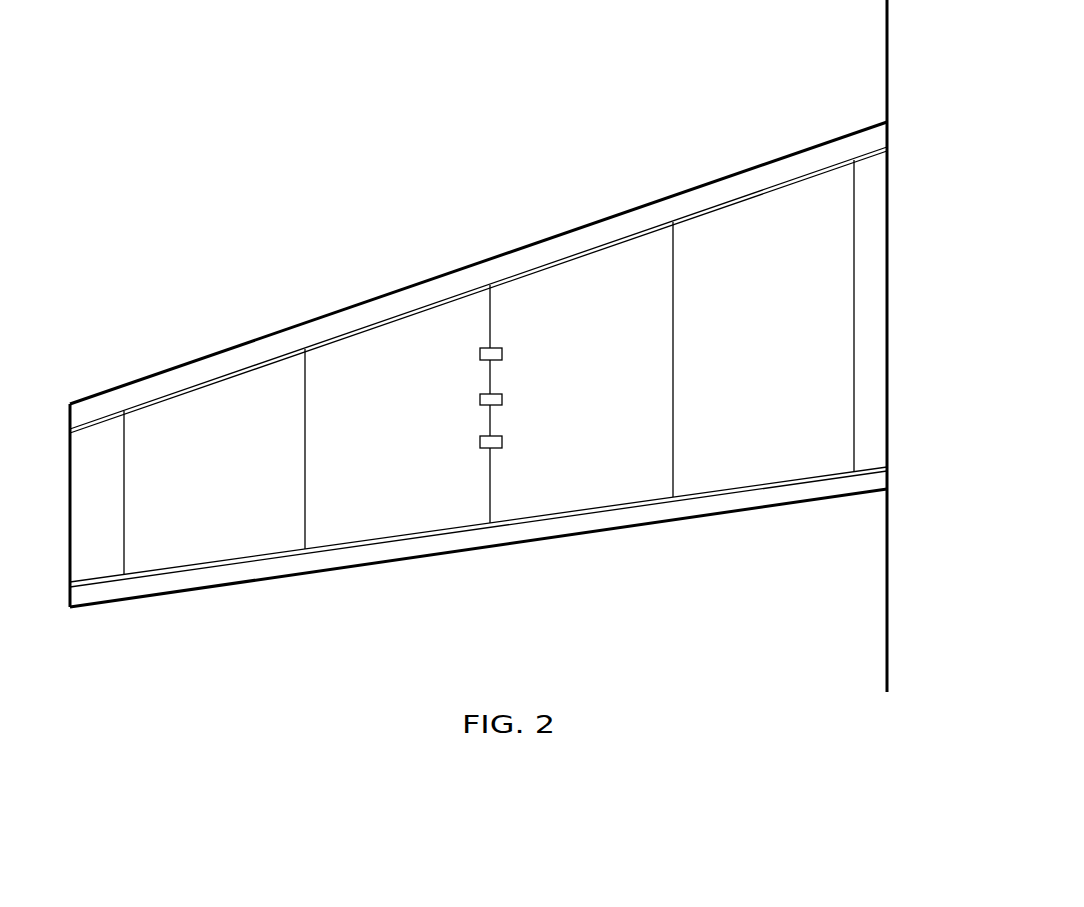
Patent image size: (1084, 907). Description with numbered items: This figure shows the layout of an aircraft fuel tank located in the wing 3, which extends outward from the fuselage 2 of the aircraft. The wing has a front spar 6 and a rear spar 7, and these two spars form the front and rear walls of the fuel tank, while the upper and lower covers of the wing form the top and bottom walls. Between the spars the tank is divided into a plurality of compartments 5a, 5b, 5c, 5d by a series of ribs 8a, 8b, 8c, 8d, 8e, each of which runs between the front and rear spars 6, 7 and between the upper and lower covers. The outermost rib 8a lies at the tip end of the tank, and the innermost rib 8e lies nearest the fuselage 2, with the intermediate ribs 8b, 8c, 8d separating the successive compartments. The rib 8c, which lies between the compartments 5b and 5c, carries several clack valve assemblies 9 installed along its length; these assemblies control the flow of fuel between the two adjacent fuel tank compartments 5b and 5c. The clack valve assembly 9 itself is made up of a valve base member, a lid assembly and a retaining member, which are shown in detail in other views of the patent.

The fuselage 2 is at (886, 84).
The wing 3 is at (598, 221).
The compartment 5a is at (223, 490).
The compartment 5b is at (408, 456).
The compartment 5c is at (582, 412).
The compartment 5d is at (767, 362).
The front spar 6 is at (168, 392).
The rear spar 7 is at (106, 590).
The rib 8a is at (125, 555).
The rib 8b is at (307, 518).
The rib 8c is at (492, 490).
The rib 8d is at (675, 468).
The rib 8e is at (856, 443).
The clack valve assembly 9 is at (480, 442).